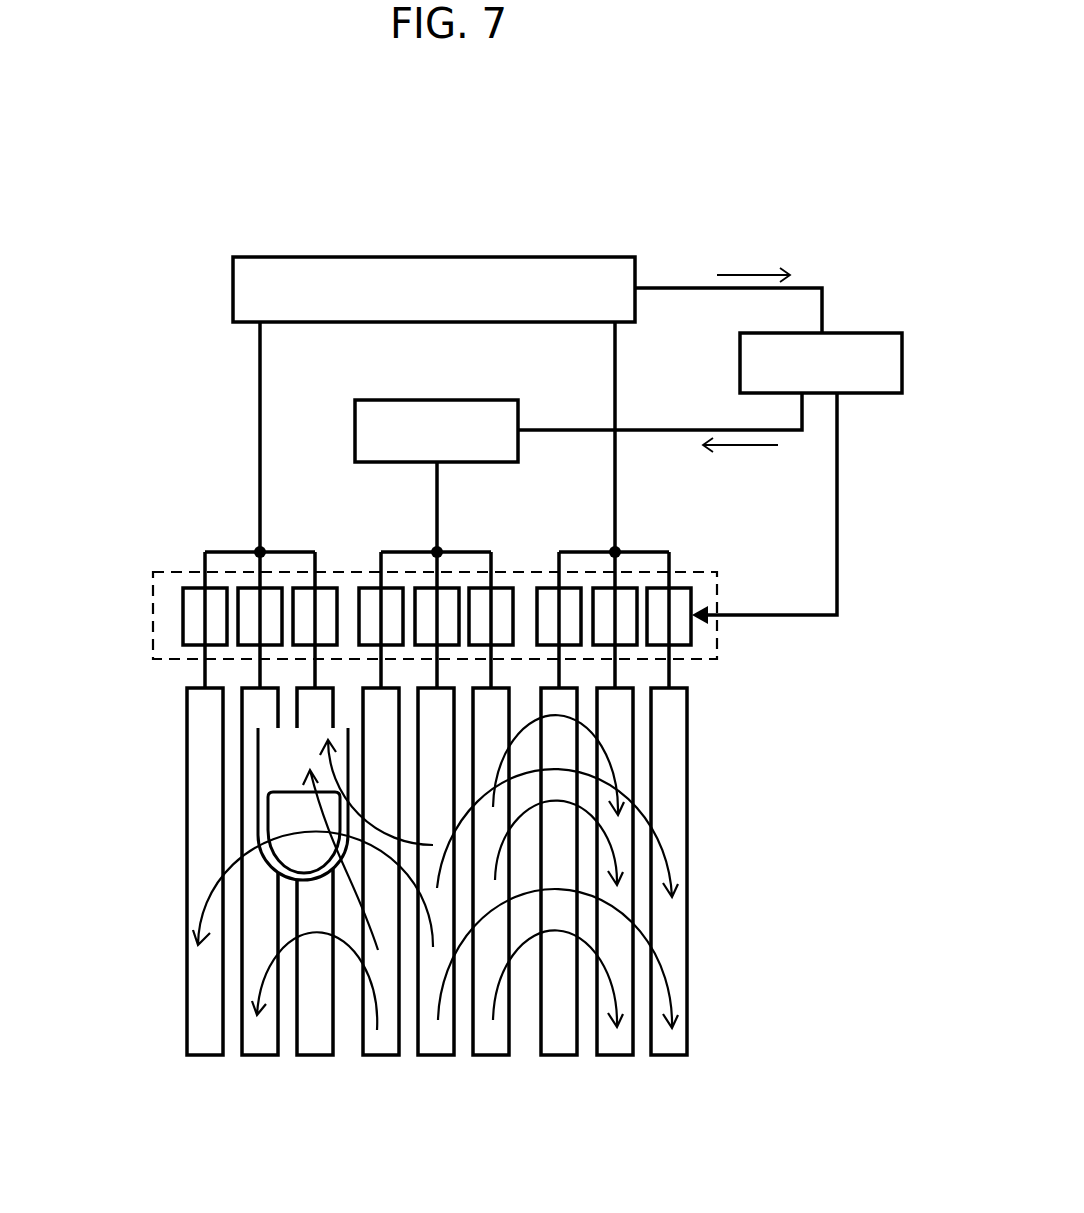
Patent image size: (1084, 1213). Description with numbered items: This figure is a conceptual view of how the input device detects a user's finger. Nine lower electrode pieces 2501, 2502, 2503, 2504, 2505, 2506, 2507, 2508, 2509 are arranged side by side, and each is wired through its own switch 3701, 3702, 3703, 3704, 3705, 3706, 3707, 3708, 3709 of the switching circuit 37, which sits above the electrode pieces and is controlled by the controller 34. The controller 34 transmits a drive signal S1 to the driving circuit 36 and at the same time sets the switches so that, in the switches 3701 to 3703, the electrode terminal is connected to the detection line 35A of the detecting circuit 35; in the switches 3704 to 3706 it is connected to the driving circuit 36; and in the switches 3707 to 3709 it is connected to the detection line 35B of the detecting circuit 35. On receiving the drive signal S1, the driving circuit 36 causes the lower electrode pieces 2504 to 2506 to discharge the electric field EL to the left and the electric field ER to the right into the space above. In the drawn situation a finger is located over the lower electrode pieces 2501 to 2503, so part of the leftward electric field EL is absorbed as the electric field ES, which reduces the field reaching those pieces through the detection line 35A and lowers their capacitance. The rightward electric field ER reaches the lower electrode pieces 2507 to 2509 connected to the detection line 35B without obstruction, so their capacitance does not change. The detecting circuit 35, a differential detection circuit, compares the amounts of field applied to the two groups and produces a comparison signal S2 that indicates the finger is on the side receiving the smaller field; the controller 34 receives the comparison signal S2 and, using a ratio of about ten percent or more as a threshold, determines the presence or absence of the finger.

The detecting circuit 35 is at (467, 253).
The detection line 35A is at (258, 425).
The detection line 35B is at (613, 372).
The driving circuit 36 is at (382, 397).
The controller 34 is at (865, 332).
The drive signal S1 is at (748, 447).
The comparison signal S2 is at (750, 273).
The switching circuit 37 is at (716, 587).
The switch 3701 is at (195, 623).
The switch 3702 is at (247, 632).
The switch 3703 is at (300, 595).
The switch 3704 is at (357, 588).
The switch 3705 is at (421, 596).
The switch 3706 is at (503, 596).
The switch 3707 is at (565, 598).
The switch 3708 is at (625, 598).
The switch 3709 is at (678, 632).
The lower electrode piece 2501 is at (207, 1047).
The lower electrode piece 2502 is at (262, 1045).
The lower electrode piece 2503 is at (317, 1045).
The lower electrode piece 2504 is at (378, 1045).
The lower electrode piece 2505 is at (436, 1045).
The lower electrode piece 2506 is at (492, 1045).
The lower electrode piece 2507 is at (559, 1045).
The lower electrode piece 2508 is at (615, 1045).
The lower electrode piece 2509 is at (670, 1045).
The electric field ES is at (327, 760).
The electric field EL is at (208, 905).
The electric field ER is at (645, 937).